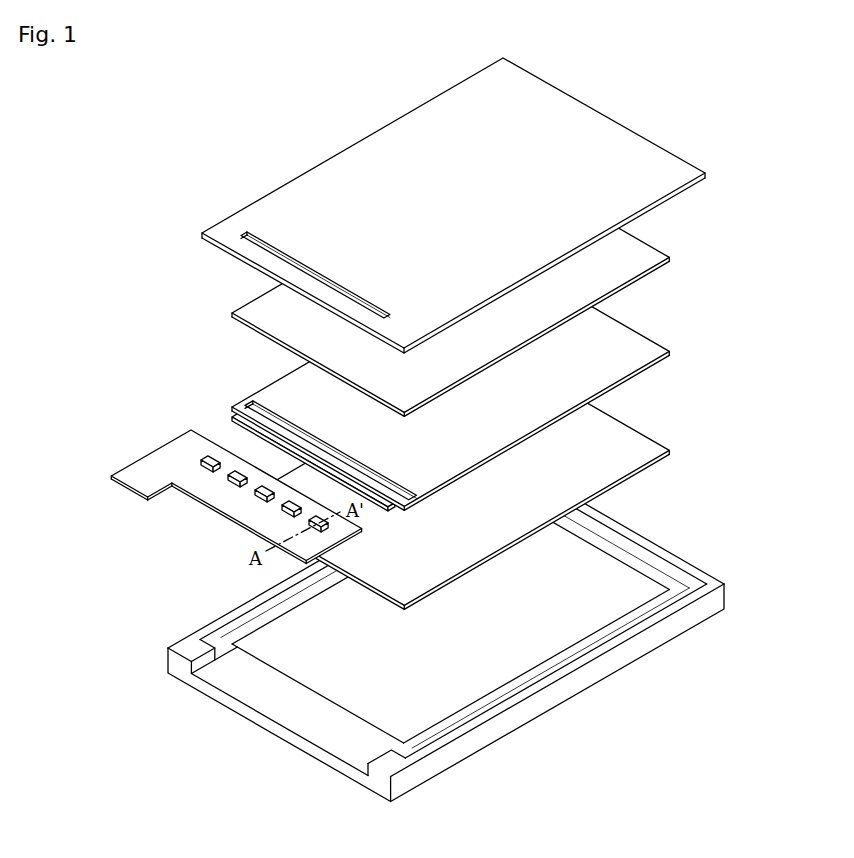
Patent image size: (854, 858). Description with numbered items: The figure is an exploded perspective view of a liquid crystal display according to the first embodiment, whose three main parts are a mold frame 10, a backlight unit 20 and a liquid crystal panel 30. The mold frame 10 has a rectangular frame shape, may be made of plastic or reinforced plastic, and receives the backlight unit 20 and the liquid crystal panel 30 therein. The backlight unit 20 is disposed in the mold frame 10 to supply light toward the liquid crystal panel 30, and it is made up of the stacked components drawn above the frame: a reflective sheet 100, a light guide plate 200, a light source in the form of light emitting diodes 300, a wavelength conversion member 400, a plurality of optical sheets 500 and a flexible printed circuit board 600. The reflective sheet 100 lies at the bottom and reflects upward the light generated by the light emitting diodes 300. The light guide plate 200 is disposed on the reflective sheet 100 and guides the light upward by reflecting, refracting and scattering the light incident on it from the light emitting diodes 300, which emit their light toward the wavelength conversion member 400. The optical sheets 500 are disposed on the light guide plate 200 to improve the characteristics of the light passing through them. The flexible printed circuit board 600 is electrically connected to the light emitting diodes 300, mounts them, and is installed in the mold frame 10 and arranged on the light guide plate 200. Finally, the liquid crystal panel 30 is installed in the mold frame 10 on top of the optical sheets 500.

The mold frame 10 is at (179, 628).
The backlight unit 20 is at (55, 366).
The liquid crystal panel 30 is at (281, 198).
The reflective sheet 100 is at (390, 578).
The light guide plate 200 is at (258, 431).
The light emitting diodes 300 is at (213, 468).
The wavelength conversion member 400 is at (232, 421).
The optical sheets 500 is at (298, 332).
The flexible printed circuit board 600 is at (183, 447).